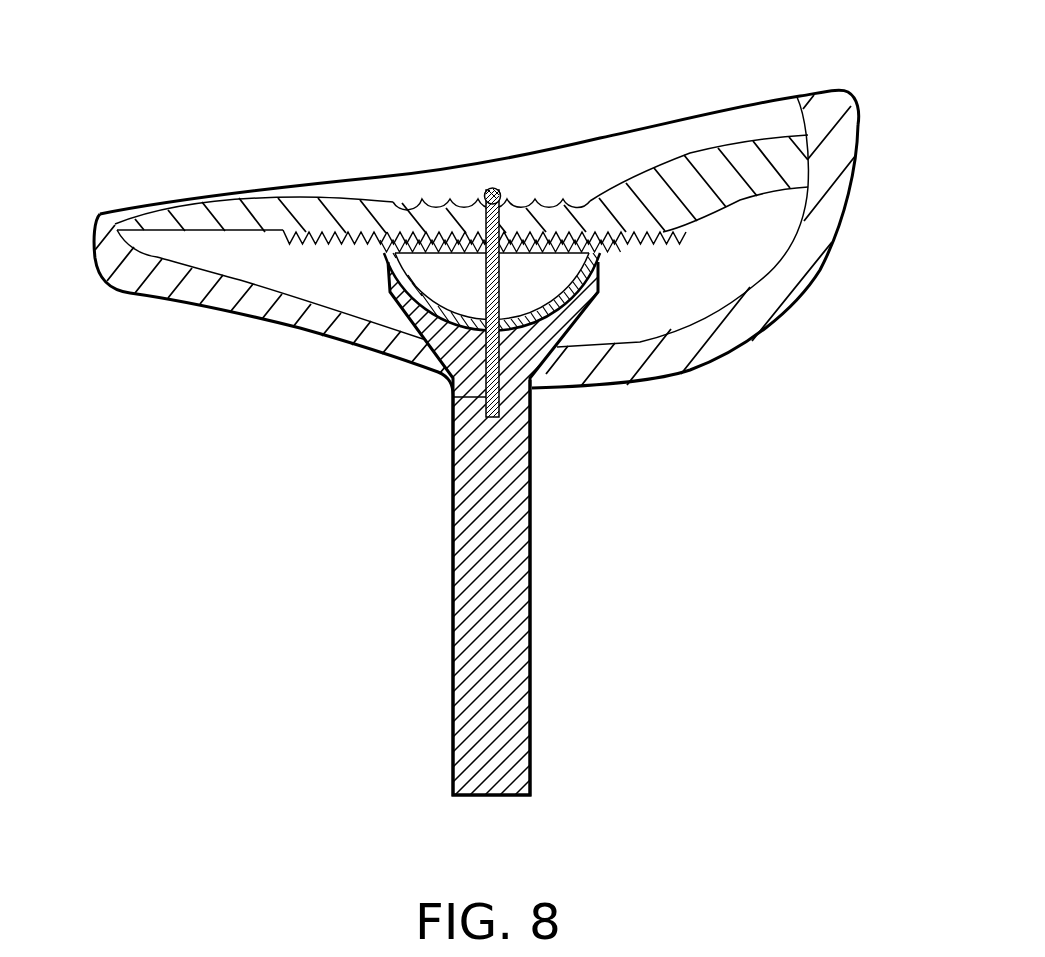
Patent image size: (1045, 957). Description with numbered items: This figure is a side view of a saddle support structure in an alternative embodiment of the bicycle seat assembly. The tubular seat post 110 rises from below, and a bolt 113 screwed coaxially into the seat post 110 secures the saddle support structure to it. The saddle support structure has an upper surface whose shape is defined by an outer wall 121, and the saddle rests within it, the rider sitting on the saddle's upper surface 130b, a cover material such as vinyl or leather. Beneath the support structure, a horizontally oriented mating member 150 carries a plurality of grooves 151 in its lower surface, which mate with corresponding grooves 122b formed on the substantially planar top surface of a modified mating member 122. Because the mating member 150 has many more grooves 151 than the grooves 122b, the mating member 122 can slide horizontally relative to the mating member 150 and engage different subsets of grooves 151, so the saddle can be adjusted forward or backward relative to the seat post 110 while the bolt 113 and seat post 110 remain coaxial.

The seat post 110 is at (513, 623).
The bolt 113 is at (453, 396).
The outer wall 121 is at (823, 213).
The mating member 122 is at (615, 268).
The grooves 122b is at (423, 218).
The upper surface 130b is at (673, 135).
The horizontally oriented mating member 150 is at (162, 222).
The grooves 151 is at (322, 243).